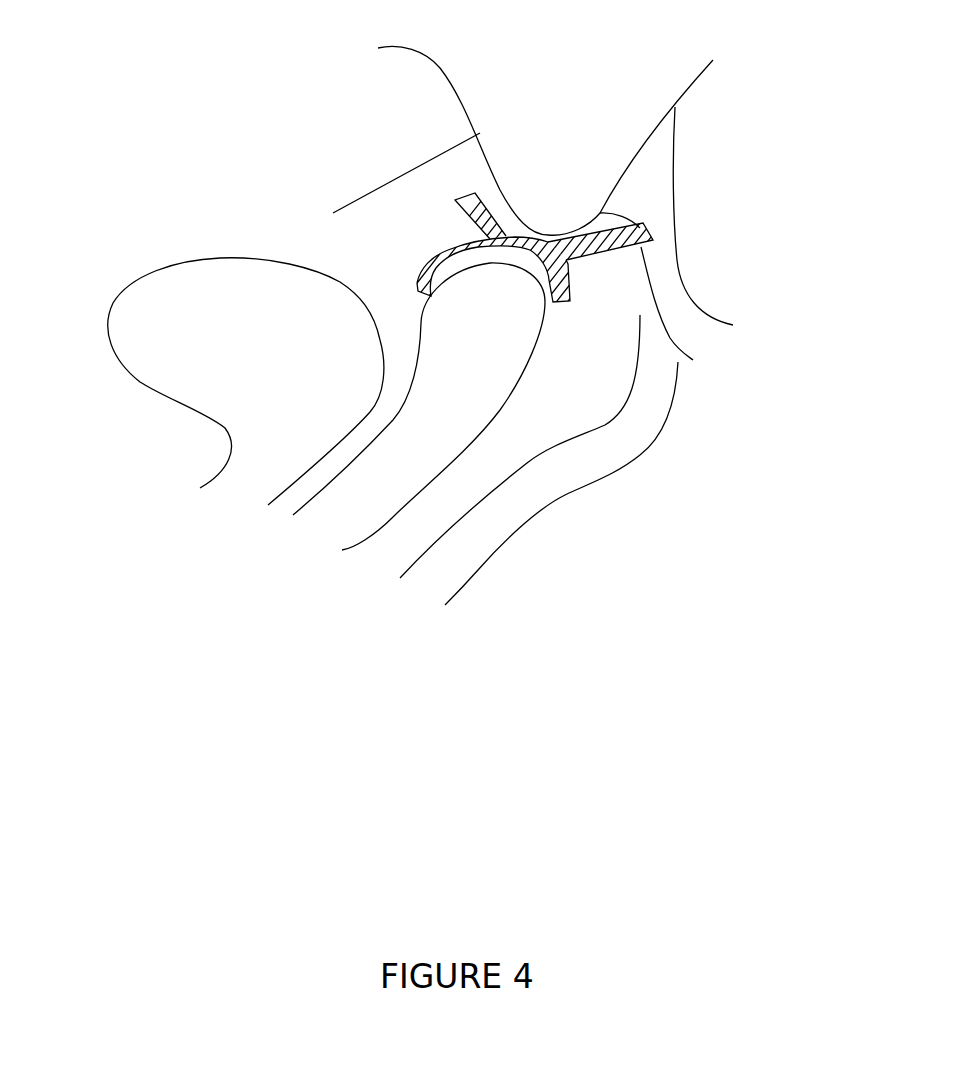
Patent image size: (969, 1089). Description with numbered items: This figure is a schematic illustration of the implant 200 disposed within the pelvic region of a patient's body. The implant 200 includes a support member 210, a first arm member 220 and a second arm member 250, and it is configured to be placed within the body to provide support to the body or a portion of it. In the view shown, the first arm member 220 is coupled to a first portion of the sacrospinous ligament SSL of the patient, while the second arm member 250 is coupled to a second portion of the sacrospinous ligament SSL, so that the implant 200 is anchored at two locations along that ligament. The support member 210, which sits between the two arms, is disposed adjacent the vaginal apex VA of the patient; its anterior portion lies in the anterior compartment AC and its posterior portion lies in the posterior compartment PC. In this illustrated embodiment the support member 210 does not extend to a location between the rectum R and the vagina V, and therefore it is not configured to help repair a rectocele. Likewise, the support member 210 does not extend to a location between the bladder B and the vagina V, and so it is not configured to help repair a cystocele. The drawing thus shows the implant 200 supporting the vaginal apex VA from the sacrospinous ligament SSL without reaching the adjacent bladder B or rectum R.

The implant 200 is at (440, 240).
The support member 210 is at (422, 270).
The first arm member 220 is at (455, 200).
The second arm member 250 is at (653, 240).
The sacrospinous ligament SSL is at (457, 173).
The anterior compartment AC is at (390, 274).
The posterior compartment PC is at (580, 286).
The vaginal apex VA is at (515, 263).
The bladder B is at (180, 375).
The vagina V is at (483, 397).
The rectum R is at (527, 503).